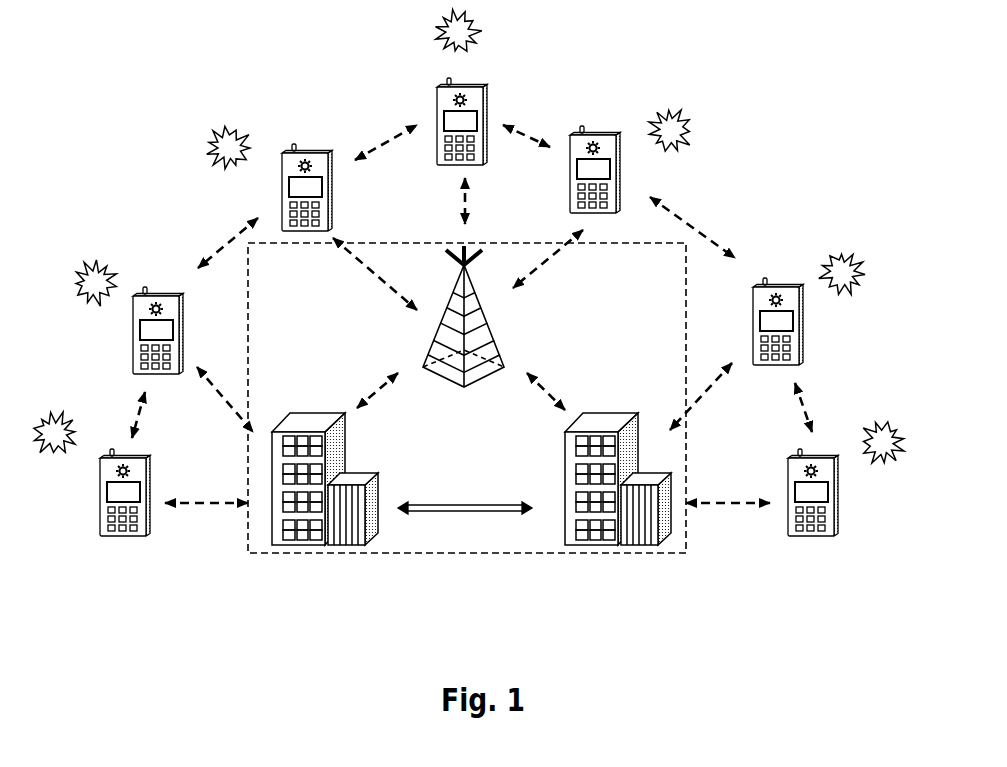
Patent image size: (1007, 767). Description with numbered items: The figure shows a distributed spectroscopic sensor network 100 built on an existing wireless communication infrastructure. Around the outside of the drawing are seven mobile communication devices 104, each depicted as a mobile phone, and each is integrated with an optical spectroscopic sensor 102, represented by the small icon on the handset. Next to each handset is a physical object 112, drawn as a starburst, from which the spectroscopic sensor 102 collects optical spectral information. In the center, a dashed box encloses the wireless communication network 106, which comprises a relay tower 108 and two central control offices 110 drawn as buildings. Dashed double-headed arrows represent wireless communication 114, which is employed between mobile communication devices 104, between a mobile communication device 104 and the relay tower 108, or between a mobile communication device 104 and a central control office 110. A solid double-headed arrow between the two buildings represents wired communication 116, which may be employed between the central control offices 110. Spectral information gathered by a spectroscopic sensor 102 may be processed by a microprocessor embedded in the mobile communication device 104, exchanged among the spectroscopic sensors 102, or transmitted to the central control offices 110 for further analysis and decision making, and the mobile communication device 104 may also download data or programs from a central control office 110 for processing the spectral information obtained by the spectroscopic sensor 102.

The distributed spectroscopic sensor network 100 is at (222, 24).
The optical spectroscopic sensor 102 is at (309, 162).
The mobile communication device 104 is at (333, 226).
The wireless communication network 106 is at (502, 441).
The relay tower 108 is at (447, 393).
The central control office 110 is at (310, 545).
The physical object 112 is at (210, 135).
The wireless communication 114 is at (398, 135).
The wired communication 116 is at (474, 504).